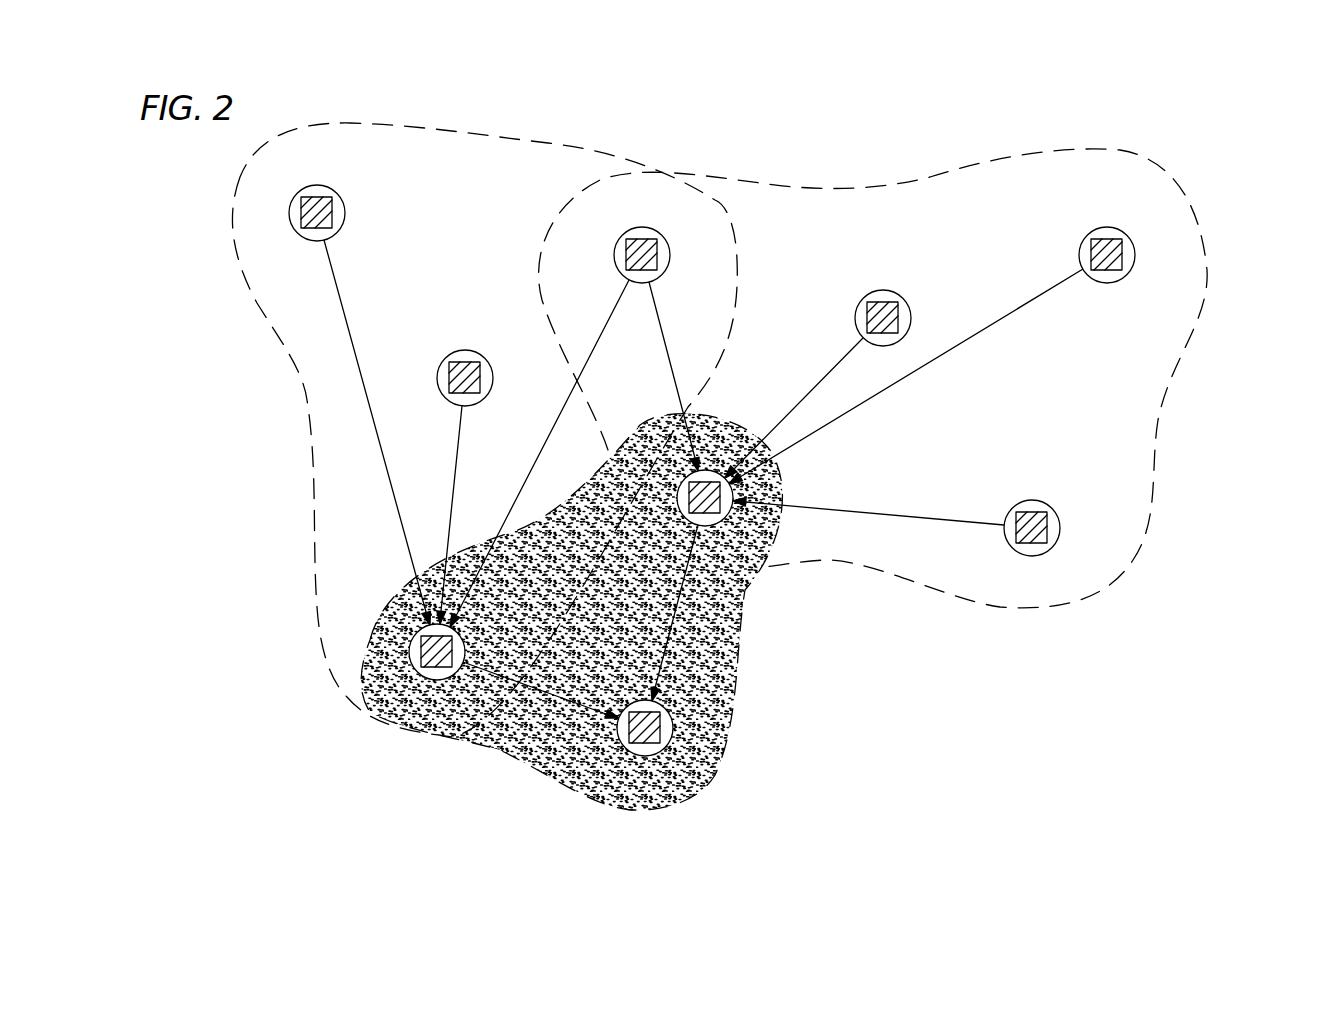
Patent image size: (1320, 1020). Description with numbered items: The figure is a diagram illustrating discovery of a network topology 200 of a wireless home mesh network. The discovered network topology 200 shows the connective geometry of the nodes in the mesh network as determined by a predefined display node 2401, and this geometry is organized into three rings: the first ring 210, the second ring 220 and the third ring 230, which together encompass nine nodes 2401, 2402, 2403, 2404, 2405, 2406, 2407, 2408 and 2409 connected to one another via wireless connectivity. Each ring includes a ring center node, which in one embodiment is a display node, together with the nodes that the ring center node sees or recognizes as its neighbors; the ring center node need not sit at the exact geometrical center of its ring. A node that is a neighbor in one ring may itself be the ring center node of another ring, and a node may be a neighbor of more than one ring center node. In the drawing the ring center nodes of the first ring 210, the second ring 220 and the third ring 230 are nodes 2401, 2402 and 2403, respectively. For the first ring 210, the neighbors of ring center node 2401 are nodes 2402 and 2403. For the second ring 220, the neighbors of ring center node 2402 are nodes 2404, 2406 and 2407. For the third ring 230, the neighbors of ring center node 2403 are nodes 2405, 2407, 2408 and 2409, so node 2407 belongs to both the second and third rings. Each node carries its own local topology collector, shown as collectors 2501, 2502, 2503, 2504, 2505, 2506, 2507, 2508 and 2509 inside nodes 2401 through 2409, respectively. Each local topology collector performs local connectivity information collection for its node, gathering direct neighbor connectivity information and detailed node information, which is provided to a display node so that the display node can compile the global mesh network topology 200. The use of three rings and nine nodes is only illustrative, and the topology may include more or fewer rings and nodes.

The network topology 200 is at (1119, 113).
The ring 1 210 is at (663, 793).
The ring 2 220 is at (330, 513).
The ring 3 230 is at (1040, 165).
The node 2401 is at (618, 737).
The node 2402 is at (408, 651).
The node 2403 is at (706, 527).
The node 2404 is at (467, 351).
The node 2405 is at (1033, 557).
The node 2406 is at (313, 185).
The node 2407 is at (614, 253).
The node 2408 is at (855, 310).
The node 2409 is at (1136, 253).
The local topology collector 2501 is at (655, 727).
The local topology collector 2502 is at (437, 652).
The local topology collector 2503 is at (717, 512).
The local topology collector 2504 is at (455, 390).
The local topology collector 2505 is at (1040, 527).
The local topology collector 2506 is at (328, 212).
The local topology collector 2507 is at (645, 245).
The local topology collector 2508 is at (883, 307).
The local topology collector 2509 is at (1112, 247).